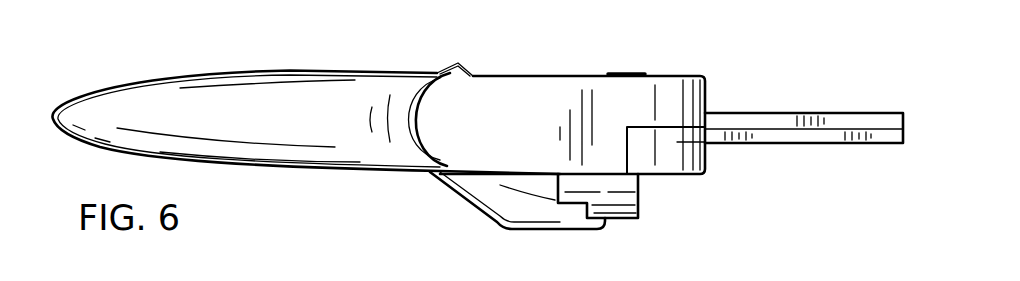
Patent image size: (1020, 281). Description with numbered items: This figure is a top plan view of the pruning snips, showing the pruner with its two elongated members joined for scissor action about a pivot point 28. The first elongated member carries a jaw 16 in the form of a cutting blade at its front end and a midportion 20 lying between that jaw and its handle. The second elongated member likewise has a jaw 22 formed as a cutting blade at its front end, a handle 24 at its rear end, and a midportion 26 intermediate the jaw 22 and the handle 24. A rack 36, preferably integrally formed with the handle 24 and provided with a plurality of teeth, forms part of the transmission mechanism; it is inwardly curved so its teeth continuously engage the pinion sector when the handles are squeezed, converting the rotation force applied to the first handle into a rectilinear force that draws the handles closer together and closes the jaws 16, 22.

The jaw 16 is at (795, 137).
The midportion 20 is at (640, 211).
The jaw 22 is at (797, 121).
The handle 24 is at (240, 97).
The midportion 26 is at (665, 90).
The pivot point 28 is at (618, 72).
The rack 36 is at (503, 200).